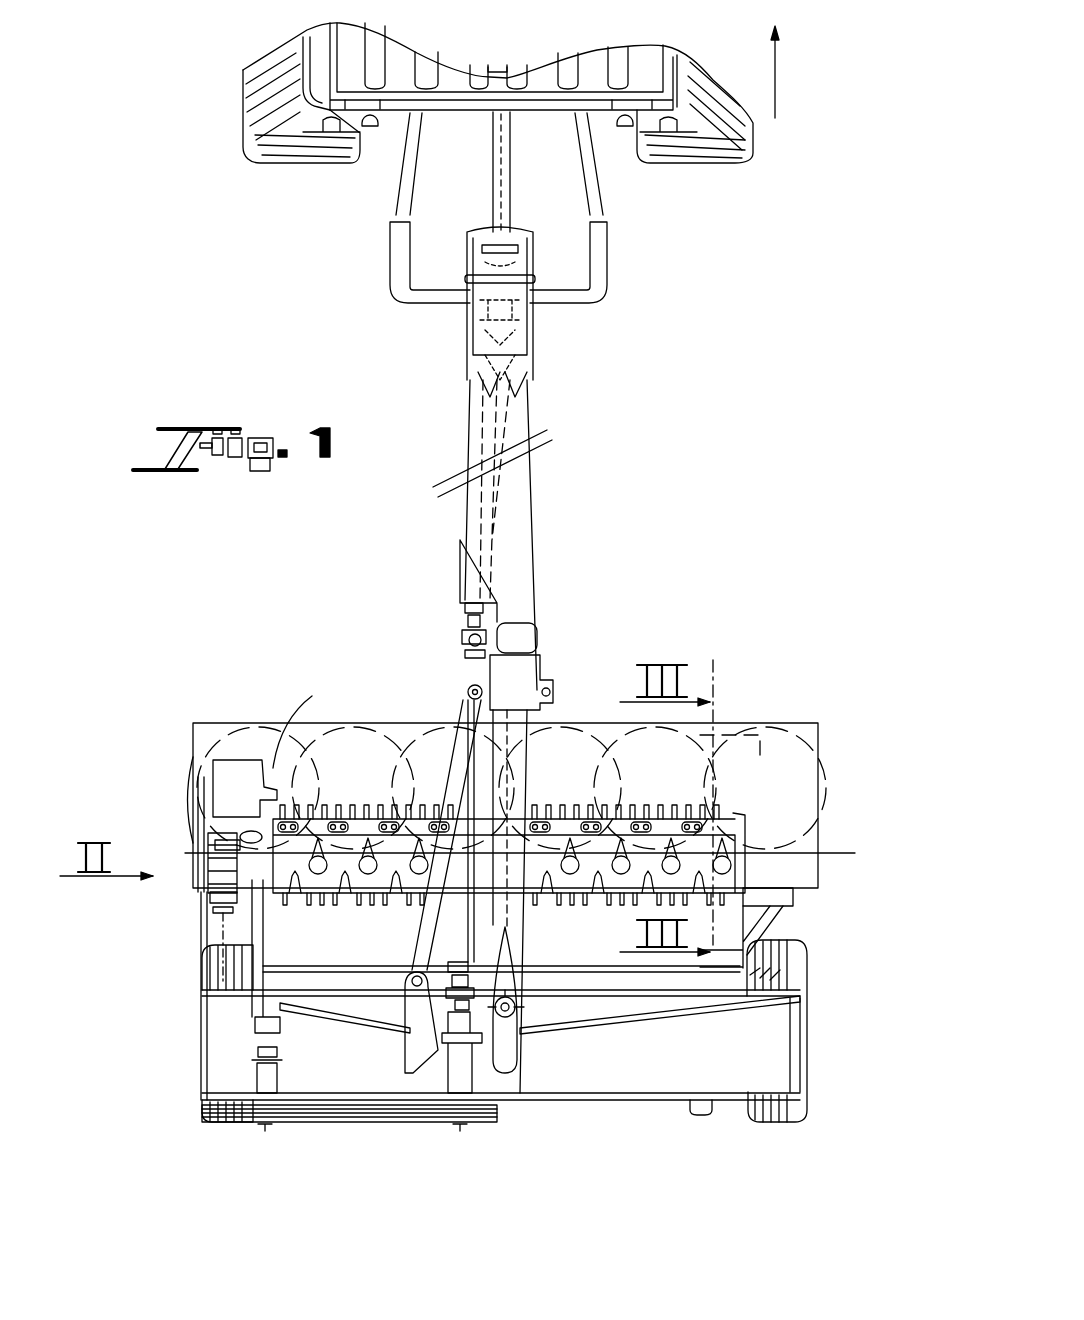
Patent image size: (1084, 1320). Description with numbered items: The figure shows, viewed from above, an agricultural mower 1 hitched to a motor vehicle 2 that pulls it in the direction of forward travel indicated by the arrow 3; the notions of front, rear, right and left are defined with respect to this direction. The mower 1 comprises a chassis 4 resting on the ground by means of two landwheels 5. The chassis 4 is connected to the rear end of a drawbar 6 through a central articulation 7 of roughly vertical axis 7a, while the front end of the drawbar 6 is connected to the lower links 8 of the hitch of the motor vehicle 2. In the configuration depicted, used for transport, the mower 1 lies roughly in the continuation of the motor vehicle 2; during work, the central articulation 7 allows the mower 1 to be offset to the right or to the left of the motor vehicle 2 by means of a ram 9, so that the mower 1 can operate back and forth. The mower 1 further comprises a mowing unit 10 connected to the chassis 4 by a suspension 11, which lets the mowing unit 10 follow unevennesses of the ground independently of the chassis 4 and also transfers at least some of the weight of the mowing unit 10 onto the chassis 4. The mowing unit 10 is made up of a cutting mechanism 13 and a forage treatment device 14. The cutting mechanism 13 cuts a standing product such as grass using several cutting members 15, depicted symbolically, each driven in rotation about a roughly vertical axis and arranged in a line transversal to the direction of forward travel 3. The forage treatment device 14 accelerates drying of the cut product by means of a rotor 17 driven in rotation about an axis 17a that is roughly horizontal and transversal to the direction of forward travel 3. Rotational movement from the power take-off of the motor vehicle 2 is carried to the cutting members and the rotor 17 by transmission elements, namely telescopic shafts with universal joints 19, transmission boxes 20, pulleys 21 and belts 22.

The agricultural mower 1 is at (793, 548).
The motor vehicle 2 is at (246, 140).
The direction of forward travel 3 is at (775, 70).
The chassis 4 is at (640, 1112).
The landwheels 5 is at (210, 1118).
The drawbar 6 is at (540, 478).
The central articulation 7 is at (512, 1012).
The axis of the central articulation 7a is at (512, 1018).
The lower links 8 is at (400, 203).
The ram 9 is at (507, 692).
The mowing unit 10 is at (825, 718).
The suspension 11 is at (775, 925).
The cutting mechanism 13 is at (208, 727).
The forage treatment device 14 is at (755, 817).
The cutting members 15 is at (768, 727).
The rotor 17 is at (572, 790).
The axis of the rotor 17a is at (855, 853).
The telescopic shafts with universal joints 19 is at (490, 133).
The transmission boxes 20 is at (520, 320).
The pulleys 21 is at (266, 1131).
The belts 22 is at (215, 846).